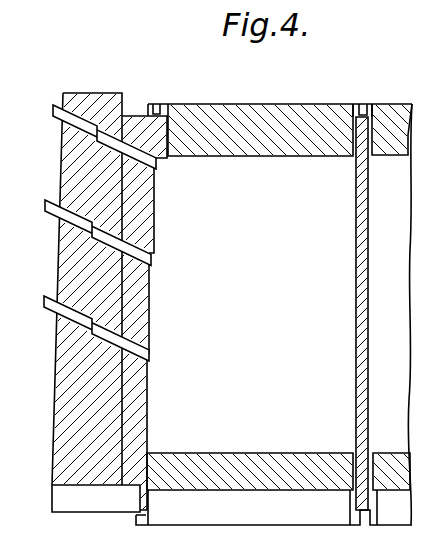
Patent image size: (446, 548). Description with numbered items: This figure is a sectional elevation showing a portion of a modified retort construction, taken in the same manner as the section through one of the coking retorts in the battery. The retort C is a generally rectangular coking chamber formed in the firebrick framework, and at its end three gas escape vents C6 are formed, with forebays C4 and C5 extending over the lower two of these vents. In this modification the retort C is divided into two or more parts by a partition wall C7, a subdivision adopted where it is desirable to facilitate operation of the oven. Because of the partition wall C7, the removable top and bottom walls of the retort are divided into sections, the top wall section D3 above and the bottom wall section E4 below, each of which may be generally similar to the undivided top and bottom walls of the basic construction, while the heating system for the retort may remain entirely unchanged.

The coking retort C is at (166, 302).
The forebay C4 is at (155, 240).
The forebay C5 is at (150, 327).
The gas escape vent C6 is at (177, 372).
The partition wall C7 is at (368, 337).
The top wall section D3 is at (305, 152).
The bottom wall section E4 is at (245, 460).